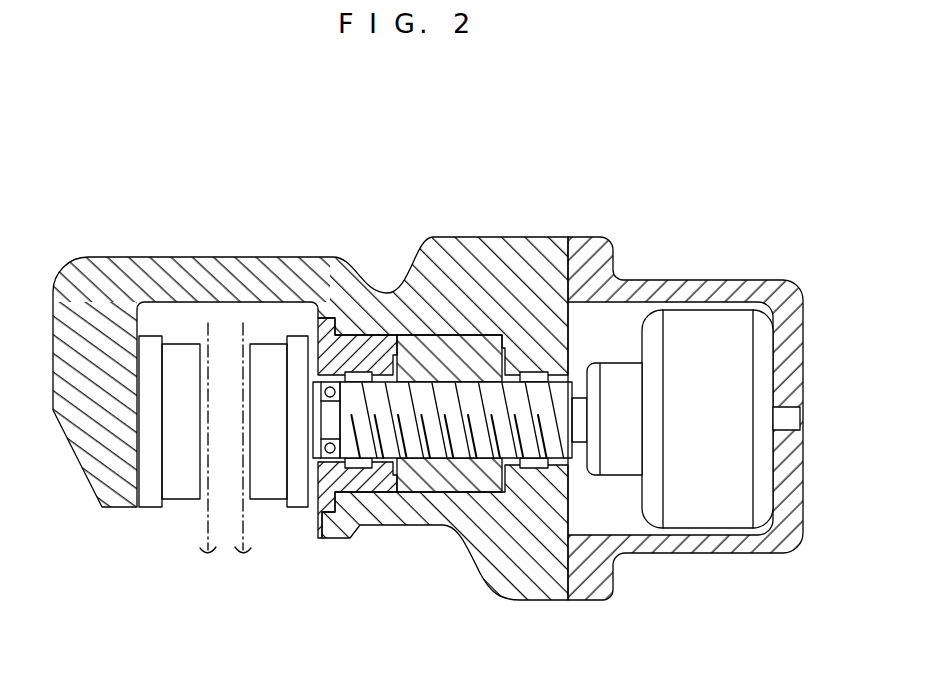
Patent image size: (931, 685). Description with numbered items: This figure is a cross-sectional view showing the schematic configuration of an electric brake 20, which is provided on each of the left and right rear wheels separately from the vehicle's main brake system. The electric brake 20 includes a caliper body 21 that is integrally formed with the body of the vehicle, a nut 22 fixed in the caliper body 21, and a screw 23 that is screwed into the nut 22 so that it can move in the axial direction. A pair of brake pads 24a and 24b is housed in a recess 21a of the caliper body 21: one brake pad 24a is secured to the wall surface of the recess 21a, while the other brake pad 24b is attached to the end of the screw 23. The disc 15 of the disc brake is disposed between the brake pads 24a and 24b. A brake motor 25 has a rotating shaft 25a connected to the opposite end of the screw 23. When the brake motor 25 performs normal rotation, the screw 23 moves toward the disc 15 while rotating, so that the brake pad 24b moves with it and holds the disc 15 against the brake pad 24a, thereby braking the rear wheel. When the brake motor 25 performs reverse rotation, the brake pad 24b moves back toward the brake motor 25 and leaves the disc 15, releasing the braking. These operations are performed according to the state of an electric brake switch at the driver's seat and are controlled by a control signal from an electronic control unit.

The electric brake 20 is at (412, 182).
The caliper body 21 is at (286, 247).
The recess 21a is at (172, 310).
The nut 22 is at (445, 480).
The screw 23 is at (401, 447).
The brake pad 24a is at (180, 507).
The brake pad 24b is at (270, 507).
The disc 15 is at (217, 550).
The brake motor 25 is at (710, 323).
The rotating shaft 25a is at (577, 393).